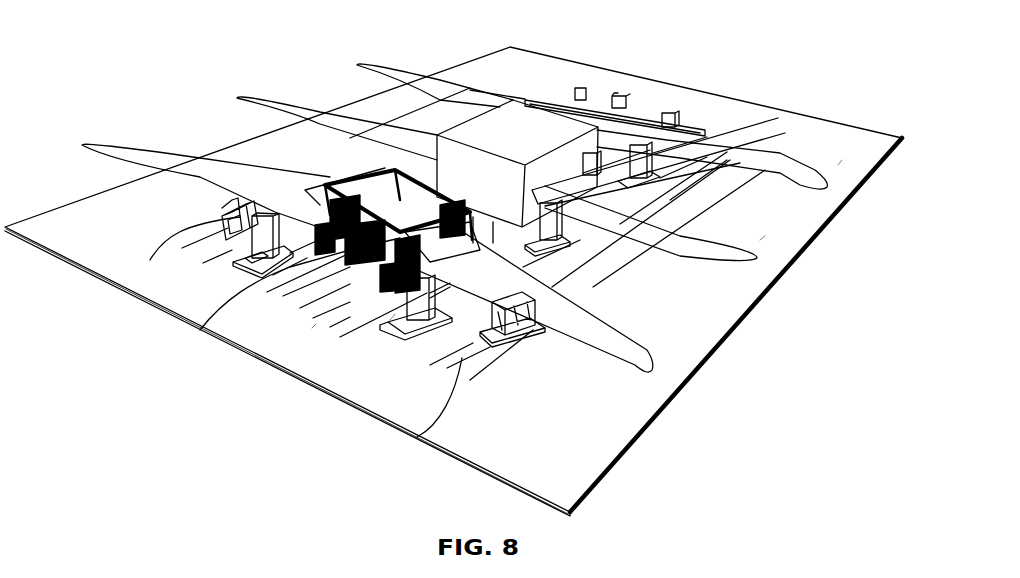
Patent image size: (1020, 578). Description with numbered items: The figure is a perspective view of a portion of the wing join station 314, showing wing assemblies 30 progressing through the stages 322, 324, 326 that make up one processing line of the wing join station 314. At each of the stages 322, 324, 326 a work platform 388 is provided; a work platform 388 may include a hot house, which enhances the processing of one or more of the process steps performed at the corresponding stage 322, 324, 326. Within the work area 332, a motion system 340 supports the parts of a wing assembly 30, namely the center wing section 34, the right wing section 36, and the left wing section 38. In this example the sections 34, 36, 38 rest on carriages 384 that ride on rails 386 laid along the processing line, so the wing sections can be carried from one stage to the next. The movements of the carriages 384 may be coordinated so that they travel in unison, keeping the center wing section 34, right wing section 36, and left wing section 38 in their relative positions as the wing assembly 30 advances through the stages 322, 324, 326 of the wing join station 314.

The wing assemblies 30 is at (96, 135).
The center wing section 34 is at (610, 127).
The right wing section 36 is at (712, 147).
The left wing section 38 is at (426, 189).
The wing join station 314 is at (793, 70).
The stage 322 is at (657, 340).
The stage 324 is at (760, 240).
The stage 326 is at (838, 163).
The work area 332 is at (310, 328).
The motion system 340 is at (212, 295).
The carriages 384 is at (182, 248).
The rails 386 is at (200, 330).
The work platforms 388 is at (505, 149).